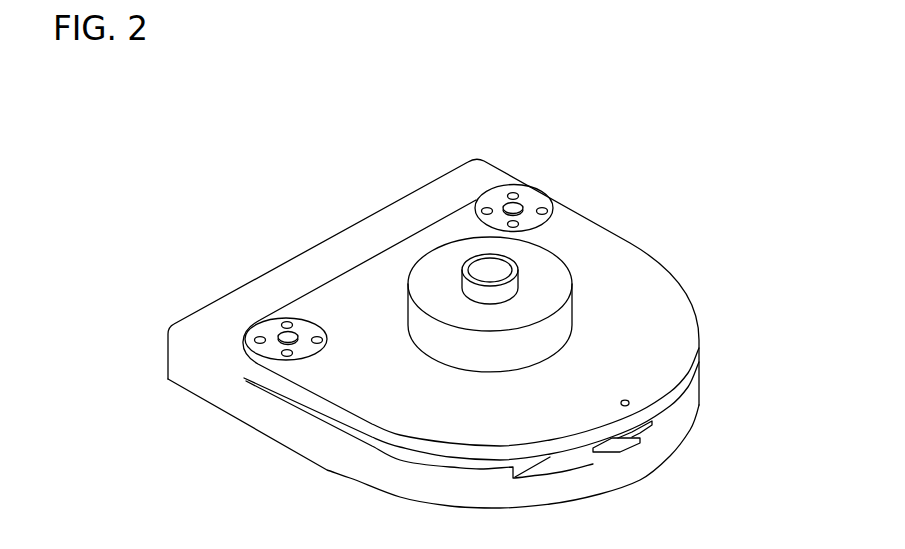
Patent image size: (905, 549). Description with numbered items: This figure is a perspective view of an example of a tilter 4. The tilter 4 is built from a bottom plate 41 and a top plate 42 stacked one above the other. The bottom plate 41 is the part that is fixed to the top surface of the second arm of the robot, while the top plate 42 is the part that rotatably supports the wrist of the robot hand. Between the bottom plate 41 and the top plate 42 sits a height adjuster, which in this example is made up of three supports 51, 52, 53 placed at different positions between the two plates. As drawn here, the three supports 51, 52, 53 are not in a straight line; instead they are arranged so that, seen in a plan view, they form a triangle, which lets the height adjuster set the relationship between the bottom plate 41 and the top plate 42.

The tilter 4 is at (310, 158).
The bottom plate 41 is at (291, 444).
The top plate 42 is at (670, 333).
The support 51 is at (267, 332).
The support 52 is at (538, 199).
The support 53 is at (622, 447).